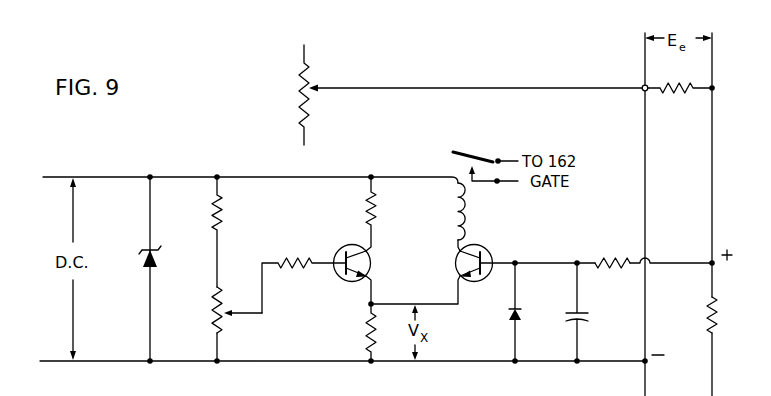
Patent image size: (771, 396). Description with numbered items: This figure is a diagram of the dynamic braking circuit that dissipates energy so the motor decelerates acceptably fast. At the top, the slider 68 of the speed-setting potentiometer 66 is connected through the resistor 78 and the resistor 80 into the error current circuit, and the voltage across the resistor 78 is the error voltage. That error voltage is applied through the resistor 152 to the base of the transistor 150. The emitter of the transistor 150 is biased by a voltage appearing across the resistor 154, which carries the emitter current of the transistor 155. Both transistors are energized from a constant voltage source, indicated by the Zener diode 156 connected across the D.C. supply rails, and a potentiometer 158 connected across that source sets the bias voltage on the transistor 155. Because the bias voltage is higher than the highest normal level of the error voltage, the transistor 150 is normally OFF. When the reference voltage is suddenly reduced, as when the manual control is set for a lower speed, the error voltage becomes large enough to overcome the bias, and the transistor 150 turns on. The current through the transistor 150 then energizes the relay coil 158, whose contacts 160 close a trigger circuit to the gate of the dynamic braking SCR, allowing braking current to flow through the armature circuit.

The potentiometer 66 is at (288, 95).
The slider 68 is at (478, 80).
The resistor 78 is at (680, 100).
The resistor 80 is at (724, 315).
The transistor 150 is at (492, 251).
The resistor 152 is at (612, 252).
The resistor 154 is at (365, 332).
The transistor 155 is at (372, 257).
The Zener diode 156 is at (168, 269).
The potentiometer / relay 158 is at (220, 330).
The relay contacts 160 is at (488, 160).